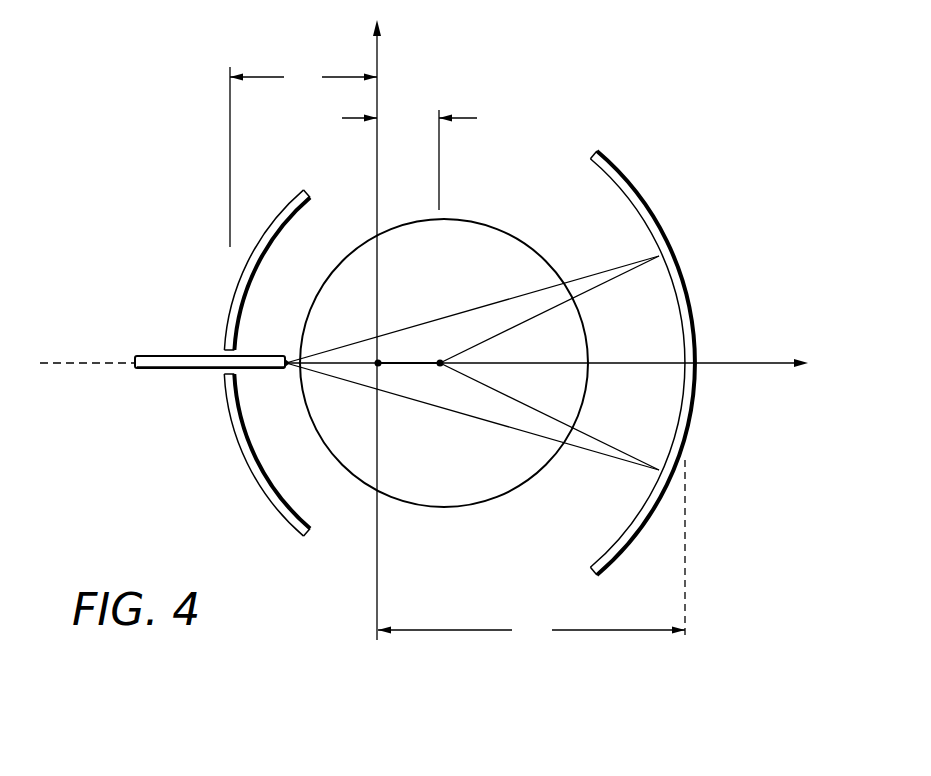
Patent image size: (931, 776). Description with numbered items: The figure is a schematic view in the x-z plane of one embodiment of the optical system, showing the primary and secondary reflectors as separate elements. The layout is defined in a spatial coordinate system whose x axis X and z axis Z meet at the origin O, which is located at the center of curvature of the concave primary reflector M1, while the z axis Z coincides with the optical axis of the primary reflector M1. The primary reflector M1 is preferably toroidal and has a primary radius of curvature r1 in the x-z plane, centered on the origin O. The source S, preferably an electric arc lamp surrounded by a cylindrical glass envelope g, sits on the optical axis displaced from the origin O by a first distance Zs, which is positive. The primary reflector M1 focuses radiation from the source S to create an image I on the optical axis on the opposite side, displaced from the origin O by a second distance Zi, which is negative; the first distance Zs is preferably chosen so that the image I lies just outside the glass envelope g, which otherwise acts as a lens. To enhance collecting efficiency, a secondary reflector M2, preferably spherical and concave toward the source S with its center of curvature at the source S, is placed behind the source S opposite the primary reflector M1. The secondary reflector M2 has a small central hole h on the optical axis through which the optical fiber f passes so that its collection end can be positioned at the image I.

The optical fiber f is at (171, 352).
The central hole h is at (212, 373).
The glass envelope g is at (458, 512).
The primary reflector M1 is at (642, 363).
The secondary reflector M2 is at (267, 344).
The image I is at (283, 346).
The origin O is at (395, 366).
The source S is at (438, 349).
The x axis X is at (387, 330).
The z axis Z is at (424, 378).
The second distance Zi is at (303, 155).
The first distance Zs is at (409, 158).
The primary radius of curvature r1 is at (531, 553).